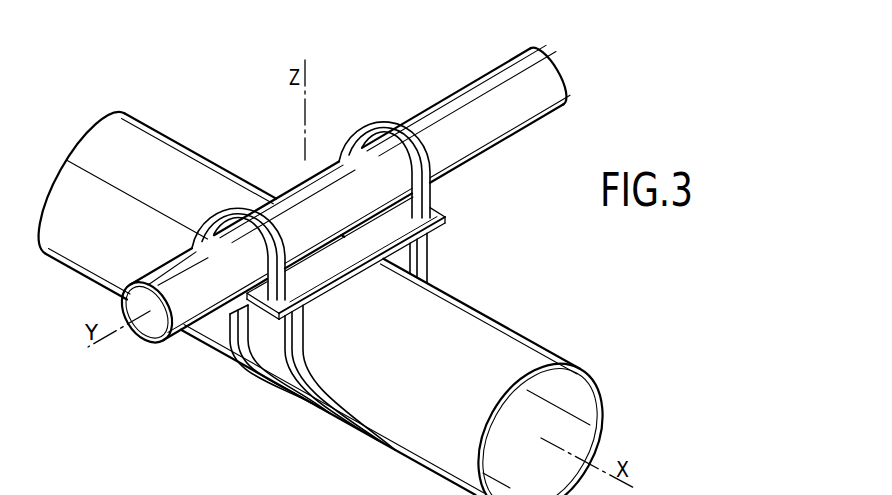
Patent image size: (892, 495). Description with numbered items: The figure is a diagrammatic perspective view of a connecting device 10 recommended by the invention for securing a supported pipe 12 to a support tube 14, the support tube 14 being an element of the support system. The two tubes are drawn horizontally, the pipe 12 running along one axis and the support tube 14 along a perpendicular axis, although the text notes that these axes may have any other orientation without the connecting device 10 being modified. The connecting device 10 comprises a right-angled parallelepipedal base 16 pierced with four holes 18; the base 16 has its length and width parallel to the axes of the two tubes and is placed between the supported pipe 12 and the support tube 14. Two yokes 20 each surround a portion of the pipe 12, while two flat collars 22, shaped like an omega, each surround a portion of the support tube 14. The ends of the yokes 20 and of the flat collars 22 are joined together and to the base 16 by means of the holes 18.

The connecting device 10 is at (365, 255).
The pipe 12 is at (501, 78).
The support tube 14 is at (484, 345).
The base 16 is at (375, 264).
The holes 18 is at (437, 203).
The yokes 20 is at (367, 121).
The flat collars 22 is at (241, 387).